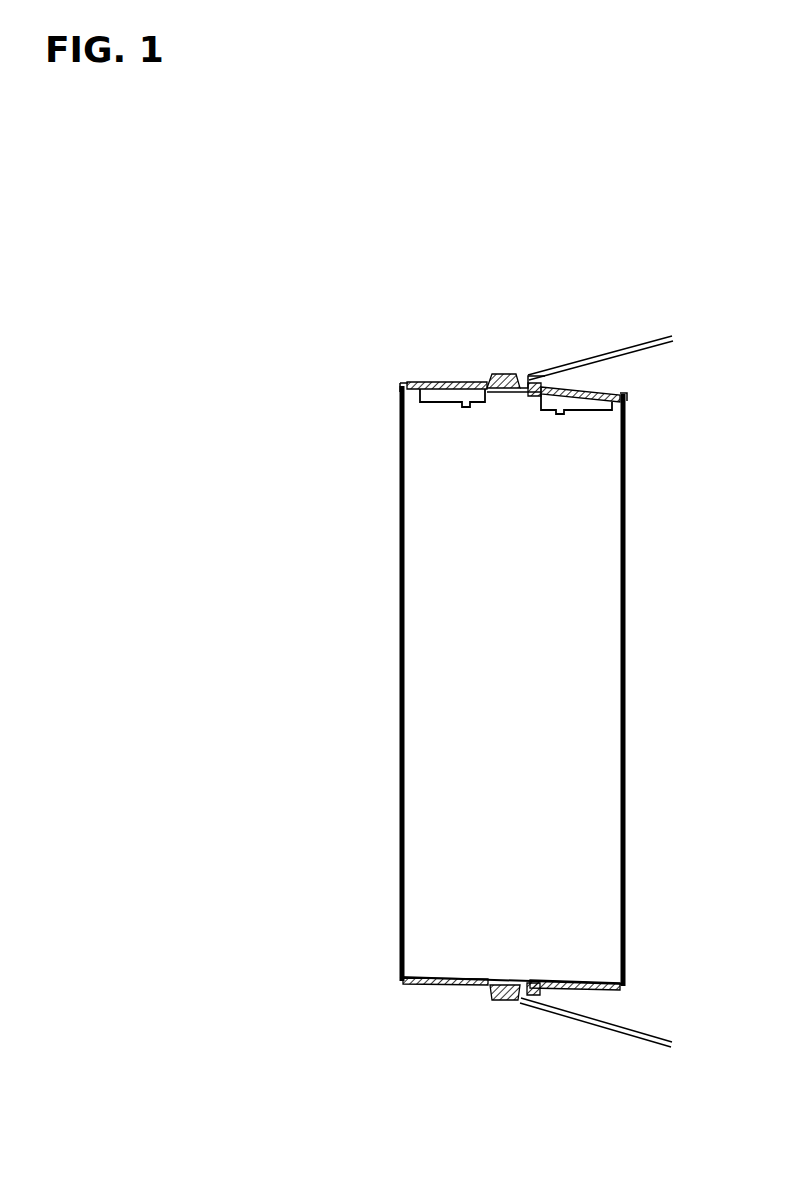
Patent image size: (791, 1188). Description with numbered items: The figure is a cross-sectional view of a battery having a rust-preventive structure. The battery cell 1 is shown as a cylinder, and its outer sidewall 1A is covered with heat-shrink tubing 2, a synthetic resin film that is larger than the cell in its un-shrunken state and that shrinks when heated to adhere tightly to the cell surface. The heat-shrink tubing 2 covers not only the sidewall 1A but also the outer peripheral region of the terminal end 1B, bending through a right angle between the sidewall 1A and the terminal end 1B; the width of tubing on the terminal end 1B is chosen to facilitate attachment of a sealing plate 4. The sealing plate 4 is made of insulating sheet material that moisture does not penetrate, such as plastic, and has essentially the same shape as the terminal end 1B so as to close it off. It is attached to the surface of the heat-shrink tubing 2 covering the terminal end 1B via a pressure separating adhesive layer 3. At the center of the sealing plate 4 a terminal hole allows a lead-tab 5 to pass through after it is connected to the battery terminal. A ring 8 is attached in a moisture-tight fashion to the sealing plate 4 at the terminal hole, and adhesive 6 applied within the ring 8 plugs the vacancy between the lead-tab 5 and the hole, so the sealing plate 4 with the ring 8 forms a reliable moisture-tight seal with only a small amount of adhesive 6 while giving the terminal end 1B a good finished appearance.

The battery cell 1 is at (537, 684).
The outer sidewall 1A is at (537, 684).
The terminal end 1B is at (554, 348).
The heat-shrink tubing 2 is at (399, 686).
The pressure separating adhesive layer 3 is at (610, 385).
The sealing plate 4 is at (433, 386).
The lead-tab 5 is at (643, 347).
The adhesive 6 is at (506, 376).
The ring 8 is at (541, 386).